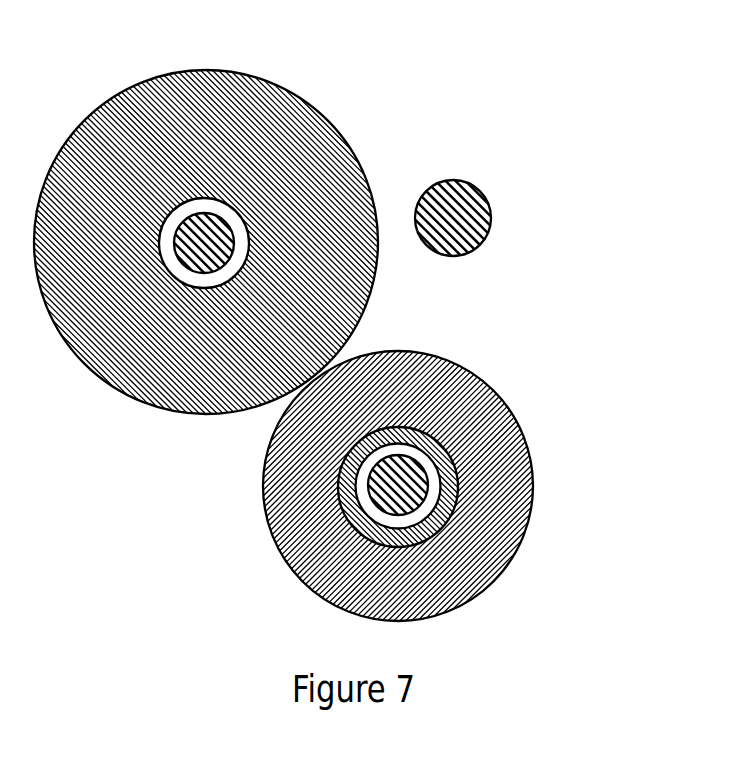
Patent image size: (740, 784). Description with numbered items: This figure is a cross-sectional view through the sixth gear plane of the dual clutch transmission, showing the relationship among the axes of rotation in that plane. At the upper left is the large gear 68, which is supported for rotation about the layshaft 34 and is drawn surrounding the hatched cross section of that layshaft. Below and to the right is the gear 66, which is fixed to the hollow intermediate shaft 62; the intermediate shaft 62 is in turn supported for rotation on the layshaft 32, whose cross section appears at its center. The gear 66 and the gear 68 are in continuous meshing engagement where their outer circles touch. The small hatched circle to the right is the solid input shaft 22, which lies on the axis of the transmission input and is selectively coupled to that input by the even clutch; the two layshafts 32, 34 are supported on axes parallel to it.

The solid input shaft 22 is at (470, 250).
The layshaft 32 is at (373, 502).
The layshaft 34 is at (177, 228).
The hollow intermediate shaft 62 is at (425, 540).
The gear 66 is at (535, 503).
The gear 68 is at (343, 138).